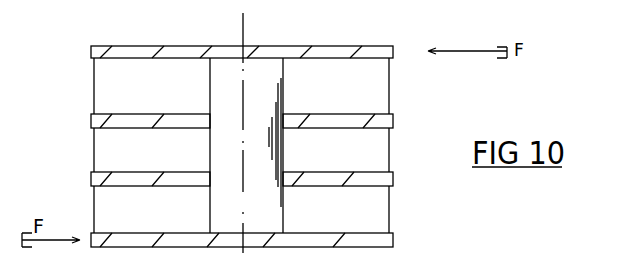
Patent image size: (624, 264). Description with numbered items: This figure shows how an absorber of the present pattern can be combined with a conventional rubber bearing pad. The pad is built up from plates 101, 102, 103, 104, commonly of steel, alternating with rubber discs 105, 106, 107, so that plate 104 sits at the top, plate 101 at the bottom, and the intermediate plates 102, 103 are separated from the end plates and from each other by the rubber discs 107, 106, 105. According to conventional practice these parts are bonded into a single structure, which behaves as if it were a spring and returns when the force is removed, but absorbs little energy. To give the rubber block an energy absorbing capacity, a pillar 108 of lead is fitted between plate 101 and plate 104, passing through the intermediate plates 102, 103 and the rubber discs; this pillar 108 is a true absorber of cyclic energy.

The plate 101 is at (395, 238).
The plate 102 is at (395, 182).
The plate 103 is at (395, 118).
The plate 104 is at (402, 43).
The rubber disc 105 is at (390, 213).
The rubber disc 106 is at (390, 148).
The rubber disc 107 is at (389, 90).
The pillar of lead 108 is at (246, 133).